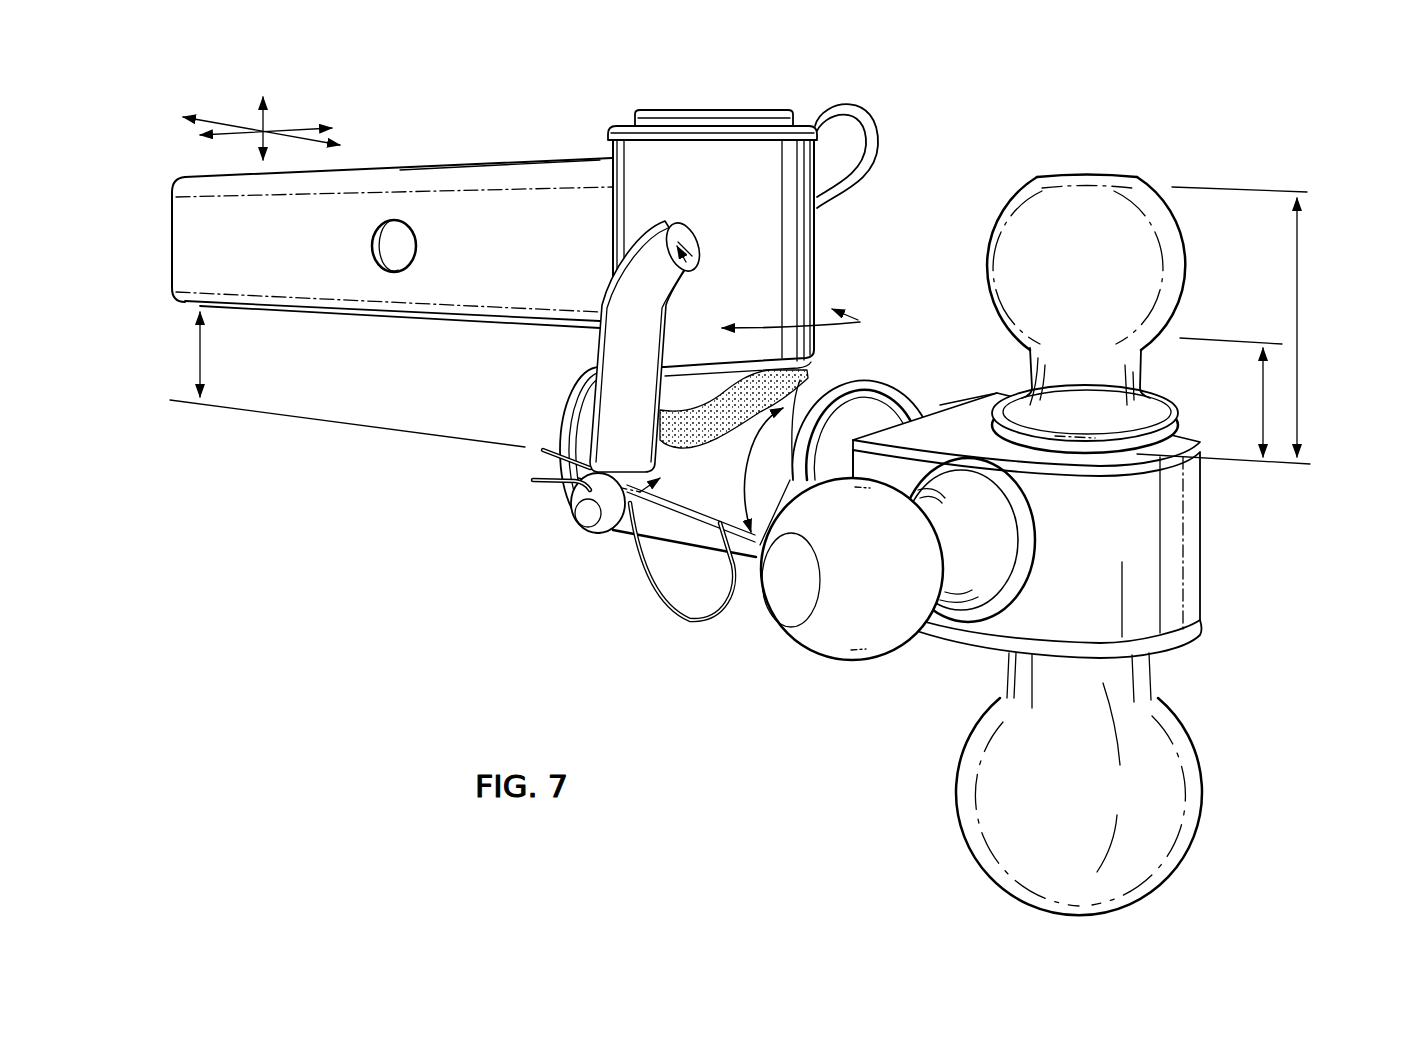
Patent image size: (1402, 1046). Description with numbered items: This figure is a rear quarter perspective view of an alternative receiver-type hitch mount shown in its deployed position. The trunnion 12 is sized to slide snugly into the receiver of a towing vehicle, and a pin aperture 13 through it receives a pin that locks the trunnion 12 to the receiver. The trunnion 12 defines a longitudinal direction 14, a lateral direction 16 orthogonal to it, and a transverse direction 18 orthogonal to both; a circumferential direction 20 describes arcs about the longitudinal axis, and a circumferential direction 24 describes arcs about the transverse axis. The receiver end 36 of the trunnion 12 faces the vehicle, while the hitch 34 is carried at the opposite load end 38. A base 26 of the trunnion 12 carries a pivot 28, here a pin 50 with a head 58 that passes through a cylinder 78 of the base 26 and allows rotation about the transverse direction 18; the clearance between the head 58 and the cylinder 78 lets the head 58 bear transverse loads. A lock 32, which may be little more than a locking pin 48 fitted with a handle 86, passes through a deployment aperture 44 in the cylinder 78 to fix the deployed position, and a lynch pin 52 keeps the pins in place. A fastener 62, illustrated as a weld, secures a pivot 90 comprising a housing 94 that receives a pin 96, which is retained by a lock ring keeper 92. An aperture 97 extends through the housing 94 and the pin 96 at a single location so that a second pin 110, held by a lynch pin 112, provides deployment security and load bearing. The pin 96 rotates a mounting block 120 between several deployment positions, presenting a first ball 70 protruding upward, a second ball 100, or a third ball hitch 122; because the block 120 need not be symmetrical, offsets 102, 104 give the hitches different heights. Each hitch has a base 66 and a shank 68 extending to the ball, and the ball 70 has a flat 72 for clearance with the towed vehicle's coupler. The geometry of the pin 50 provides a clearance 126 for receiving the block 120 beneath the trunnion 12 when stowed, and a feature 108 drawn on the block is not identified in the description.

The trunnion 12 is at (308, 260).
The pin aperture 13 is at (397, 242).
The longitudinal direction 14 is at (313, 127).
The lateral direction 16 is at (207, 117).
The transverse direction 18 is at (262, 116).
The circumferential direction 20 is at (745, 487).
The circumferential direction 24 is at (860, 322).
The base 26 is at (780, 212).
The pivot 28 is at (690, 103).
The lock 32 is at (583, 338).
The hitch 34 is at (1193, 310).
The receiver end 36 is at (185, 230).
The load end 38 is at (573, 200).
The deployment aperture 44 is at (695, 274).
The locking pin 48 is at (610, 355).
The pivot pin 50 is at (675, 387).
The lynch pin 52 is at (865, 122).
The head 58 is at (753, 110).
The fastener 62 is at (790, 380).
The base 66 is at (1017, 587).
The shank 68 is at (1103, 385).
The first ball 70 is at (1114, 231).
The flat 72 is at (1090, 175).
The cylinder 78 is at (717, 194).
The handle 86 is at (626, 345).
The pivot 90 is at (547, 513).
The lock ring 92 is at (628, 122).
The housing 94 is at (720, 483).
The pin 96 is at (873, 415).
The aperture 97 is at (630, 508).
The second ball 100 is at (1000, 810).
The offset 102 is at (1298, 310).
The offset 104 is at (1267, 395).
The block edge 108 is at (942, 405).
The second pin 110 is at (583, 520).
The lynch pin 112 is at (665, 605).
The mounting block 120 is at (1074, 505).
The third ball hitch 122 is at (820, 633).
The clearance 126 is at (200, 352).